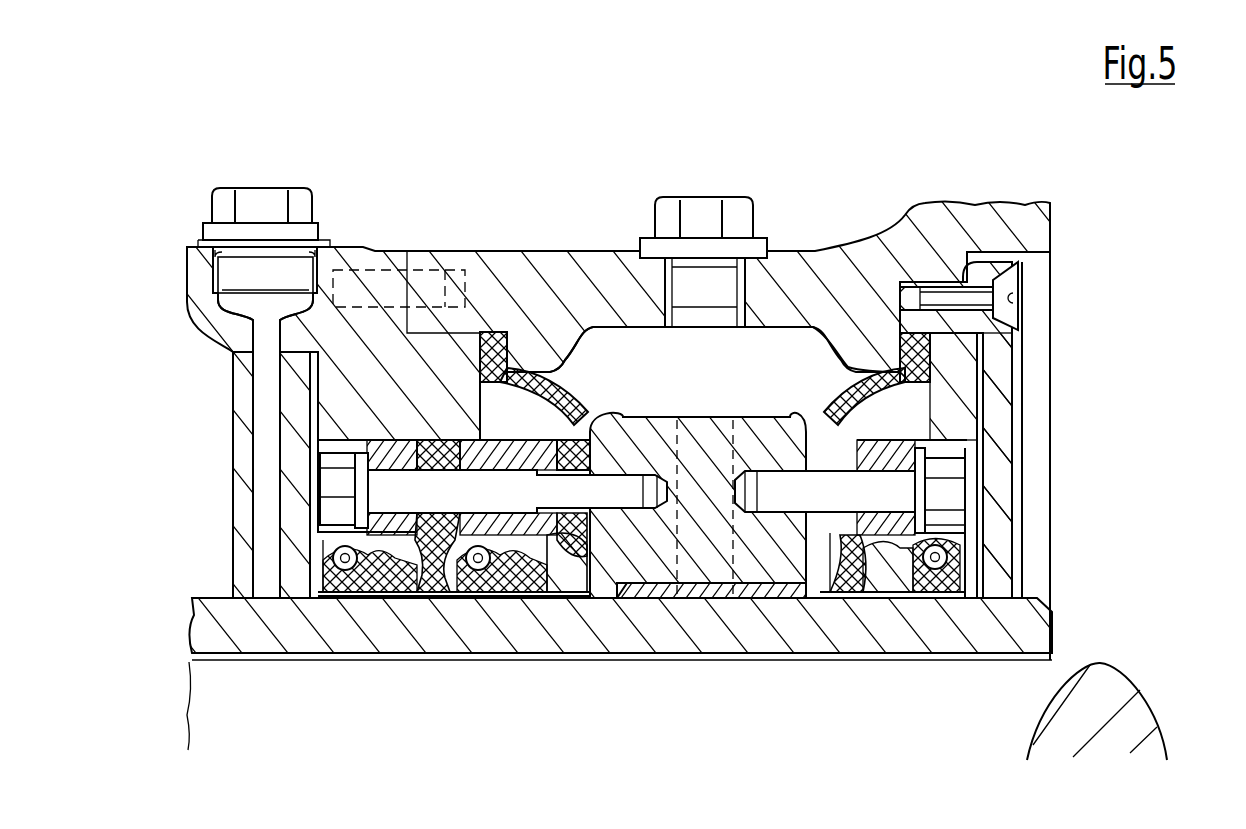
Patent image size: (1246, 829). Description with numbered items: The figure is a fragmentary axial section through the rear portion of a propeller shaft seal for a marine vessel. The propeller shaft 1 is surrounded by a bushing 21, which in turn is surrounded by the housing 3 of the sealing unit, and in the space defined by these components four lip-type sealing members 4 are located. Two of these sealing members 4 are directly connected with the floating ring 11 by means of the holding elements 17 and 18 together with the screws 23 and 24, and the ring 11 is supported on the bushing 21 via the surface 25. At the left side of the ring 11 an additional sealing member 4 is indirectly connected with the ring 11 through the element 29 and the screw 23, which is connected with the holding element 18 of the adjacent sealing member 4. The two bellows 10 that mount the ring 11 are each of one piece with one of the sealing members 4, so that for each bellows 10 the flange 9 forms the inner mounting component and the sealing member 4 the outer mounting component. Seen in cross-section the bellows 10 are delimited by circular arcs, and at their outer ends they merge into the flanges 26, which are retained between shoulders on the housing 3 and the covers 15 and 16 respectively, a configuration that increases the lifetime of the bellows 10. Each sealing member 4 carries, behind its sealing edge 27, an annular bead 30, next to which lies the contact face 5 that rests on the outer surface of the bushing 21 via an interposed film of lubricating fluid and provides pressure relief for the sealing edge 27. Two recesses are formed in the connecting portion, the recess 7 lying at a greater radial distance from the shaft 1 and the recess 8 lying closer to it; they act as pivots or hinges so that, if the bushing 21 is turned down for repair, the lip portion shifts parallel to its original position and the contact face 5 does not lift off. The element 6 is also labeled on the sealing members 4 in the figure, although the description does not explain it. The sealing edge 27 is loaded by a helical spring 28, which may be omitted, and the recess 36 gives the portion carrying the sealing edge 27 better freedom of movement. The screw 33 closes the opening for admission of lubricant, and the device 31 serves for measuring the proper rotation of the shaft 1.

The propeller shaft 1 is at (1100, 725).
The housing 3 is at (985, 232).
The lip-type sealing member 4 is at (478, 598).
The contact face 5 is at (425, 598).
The seal element 6 is at (442, 598).
The recess 7 is at (495, 598).
The recess 8 is at (457, 598).
The flange 9 is at (310, 445).
The bellows 10 is at (552, 373).
The floating ring 11 is at (636, 430).
The cover 15 is at (988, 362).
The cover 16 is at (362, 337).
The holding element 17 is at (477, 440).
The holding element 18 is at (977, 443).
The bushing 21 is at (1010, 627).
The screw 23 is at (337, 500).
The screw 24 is at (947, 488).
The surface 25 is at (713, 598).
The flange 26 is at (503, 335).
The sealing edge 27 is at (365, 598).
The helical spring 28 is at (345, 598).
The element 29 is at (330, 455).
The annular bead 30 is at (407, 598).
The device for measuring the proper rotation of the shaft 31 is at (237, 278).
The screw 33 is at (690, 197).
The recess 36 is at (388, 598).